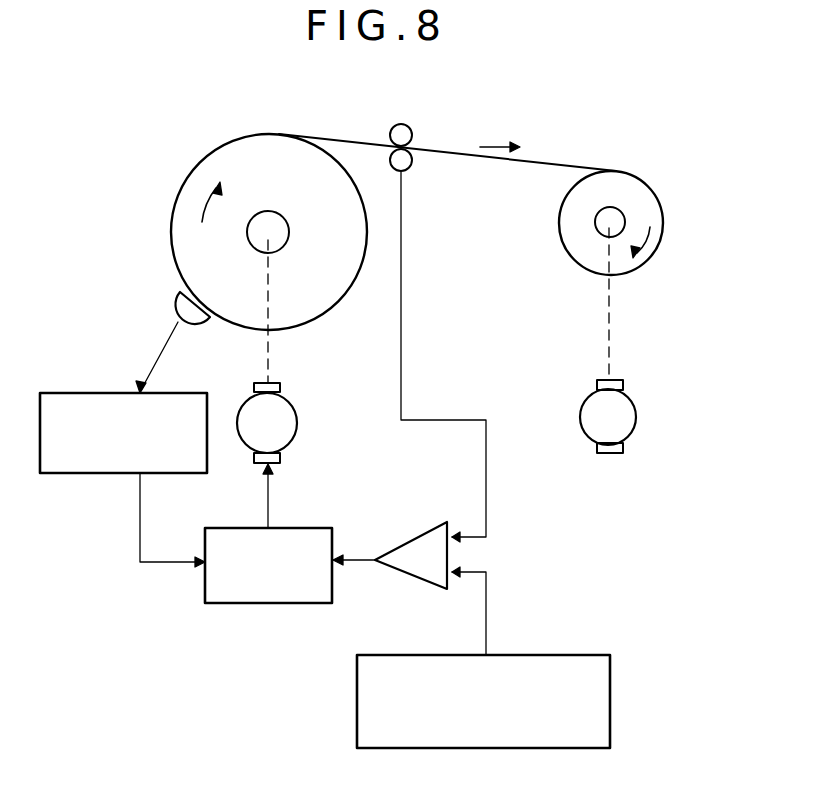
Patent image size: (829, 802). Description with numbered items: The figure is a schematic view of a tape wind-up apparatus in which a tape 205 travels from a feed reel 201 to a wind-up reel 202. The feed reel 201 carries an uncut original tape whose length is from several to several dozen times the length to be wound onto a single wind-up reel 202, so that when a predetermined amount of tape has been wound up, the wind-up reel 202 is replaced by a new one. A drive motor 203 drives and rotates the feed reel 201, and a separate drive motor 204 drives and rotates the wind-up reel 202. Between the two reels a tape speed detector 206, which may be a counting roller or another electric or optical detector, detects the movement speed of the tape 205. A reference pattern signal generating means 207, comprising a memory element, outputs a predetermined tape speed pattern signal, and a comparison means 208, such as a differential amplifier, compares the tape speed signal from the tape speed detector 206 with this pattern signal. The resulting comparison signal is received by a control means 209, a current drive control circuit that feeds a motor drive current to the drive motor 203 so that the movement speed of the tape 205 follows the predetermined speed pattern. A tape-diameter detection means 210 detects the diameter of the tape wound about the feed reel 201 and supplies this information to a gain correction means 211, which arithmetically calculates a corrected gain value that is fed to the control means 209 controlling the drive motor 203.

The feed reel 201 is at (231, 142).
The wind-up reel 202 is at (643, 198).
The drive motor 203 is at (298, 430).
The drive motor 204 is at (626, 423).
The tape 205 is at (348, 140).
The tape speed detector 206 is at (411, 142).
The reference pattern signal generating means 207 is at (482, 748).
The comparison means 208 is at (427, 538).
The control means 209 is at (310, 527).
The tape-diameter detection means 210 is at (175, 302).
The gain correction means 211 is at (177, 473).